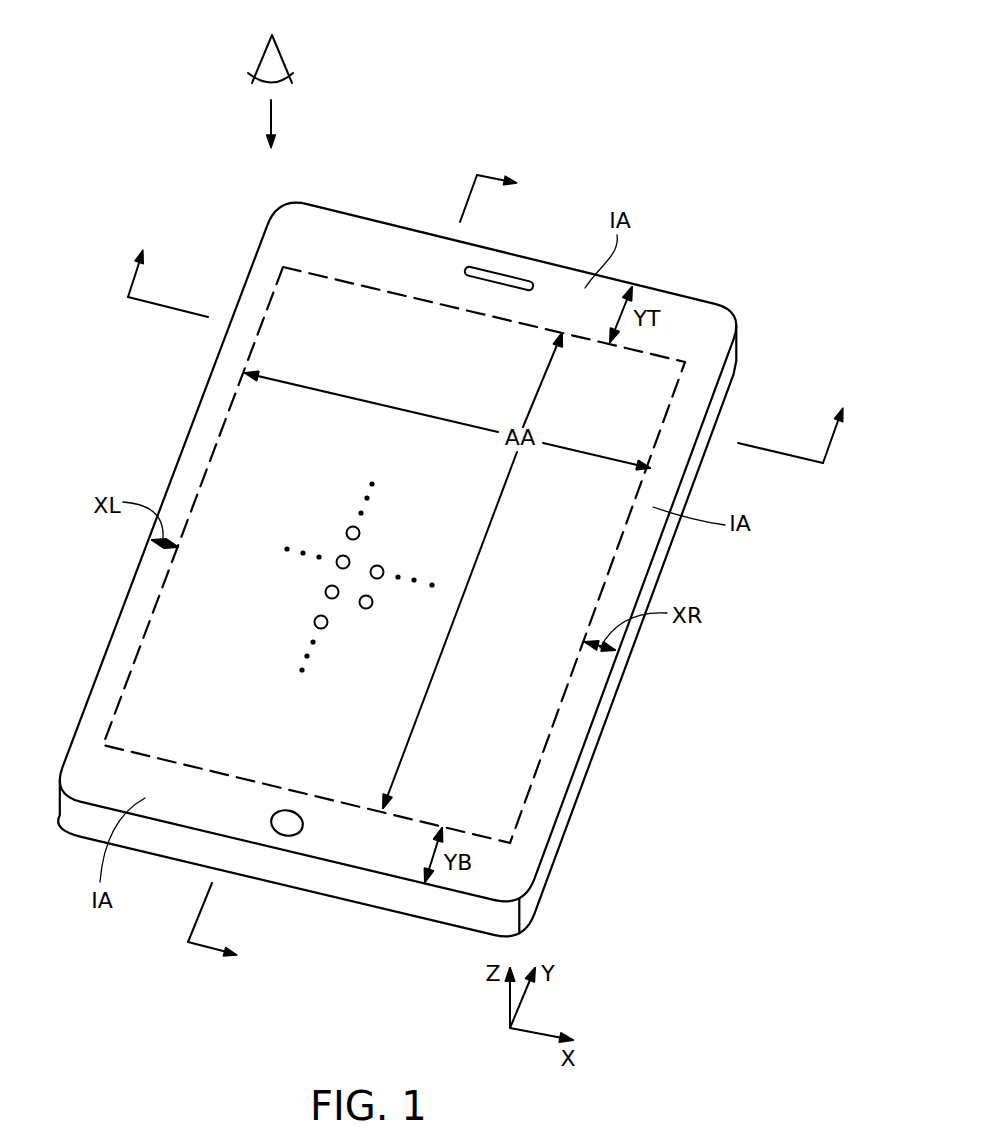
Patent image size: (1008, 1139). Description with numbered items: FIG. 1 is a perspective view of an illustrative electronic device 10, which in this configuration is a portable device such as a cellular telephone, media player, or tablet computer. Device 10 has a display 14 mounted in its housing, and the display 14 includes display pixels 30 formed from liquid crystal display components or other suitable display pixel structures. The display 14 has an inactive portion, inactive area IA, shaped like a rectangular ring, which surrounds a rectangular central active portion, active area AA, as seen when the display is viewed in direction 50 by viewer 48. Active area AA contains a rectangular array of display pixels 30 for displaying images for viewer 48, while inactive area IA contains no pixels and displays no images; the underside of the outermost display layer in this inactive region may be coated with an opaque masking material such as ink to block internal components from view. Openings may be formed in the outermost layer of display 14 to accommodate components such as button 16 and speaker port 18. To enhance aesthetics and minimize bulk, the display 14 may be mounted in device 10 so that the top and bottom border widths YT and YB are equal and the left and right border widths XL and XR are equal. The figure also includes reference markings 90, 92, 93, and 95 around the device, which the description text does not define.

The electronic device 10 is at (450, 150).
The display 14 is at (275, 435).
The button 16 is at (303, 830).
The speaker port 18 is at (503, 278).
The display pixels 30 is at (328, 624).
The viewer 48 is at (282, 58).
The direction 50 is at (275, 127).
The light-receiving surface 90 is at (468, 195).
The light propagation direction 92 is at (492, 175).
The light-receiving surface 93 is at (170, 305).
The light propagation direction 95 is at (128, 292).